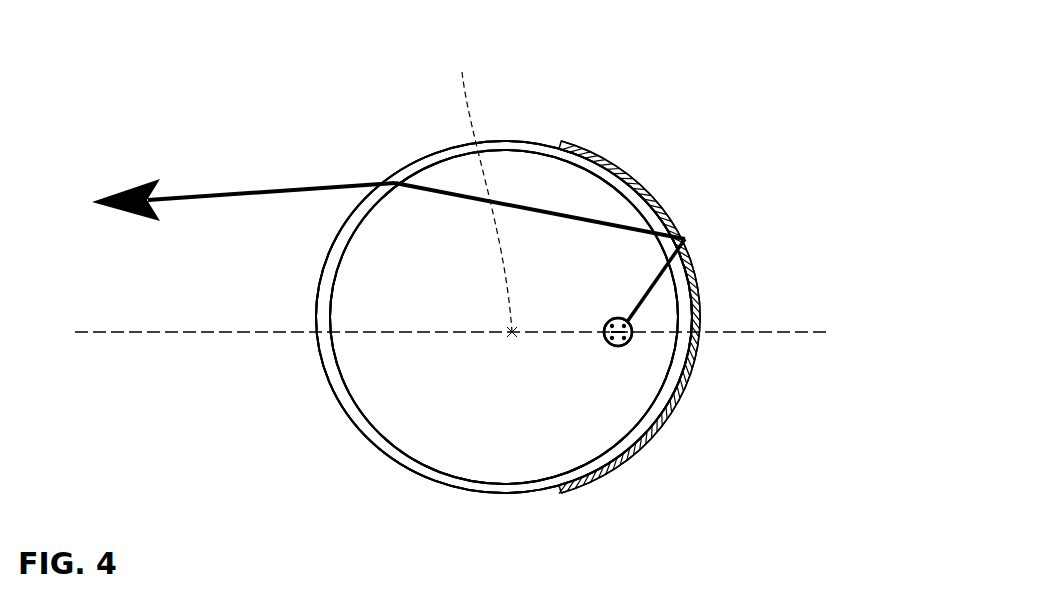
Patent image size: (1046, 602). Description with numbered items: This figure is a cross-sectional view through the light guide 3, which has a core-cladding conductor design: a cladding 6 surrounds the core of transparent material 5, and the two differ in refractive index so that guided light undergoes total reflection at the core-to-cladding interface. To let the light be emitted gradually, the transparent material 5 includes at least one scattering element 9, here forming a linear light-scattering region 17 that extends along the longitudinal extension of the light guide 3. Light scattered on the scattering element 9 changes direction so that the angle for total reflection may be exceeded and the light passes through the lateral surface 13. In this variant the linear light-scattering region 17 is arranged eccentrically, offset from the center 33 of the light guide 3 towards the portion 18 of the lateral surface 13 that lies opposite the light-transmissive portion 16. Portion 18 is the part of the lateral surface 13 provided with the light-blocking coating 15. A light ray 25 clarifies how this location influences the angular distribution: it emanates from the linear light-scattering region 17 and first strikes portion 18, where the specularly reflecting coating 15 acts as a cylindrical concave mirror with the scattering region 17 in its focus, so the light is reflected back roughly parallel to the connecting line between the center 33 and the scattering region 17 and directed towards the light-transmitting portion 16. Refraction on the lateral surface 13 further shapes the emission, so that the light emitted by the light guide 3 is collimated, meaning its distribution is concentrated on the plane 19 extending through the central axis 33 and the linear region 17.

The light guide 3 is at (362, 168).
The transparent material 5 is at (542, 428).
The cladding 6 is at (416, 160).
The scattering element 9 is at (604, 340).
The linear light-scattering region 17 is at (478, 408).
The lateral surface 13 is at (328, 228).
The light-blocking coating 15 is at (672, 217).
The light-transmissive portion 16 is at (326, 377).
The portion of the lateral surface 18 is at (652, 438).
The plane 19 is at (804, 333).
The light ray 25 is at (218, 191).
The center 33 is at (478, 178).